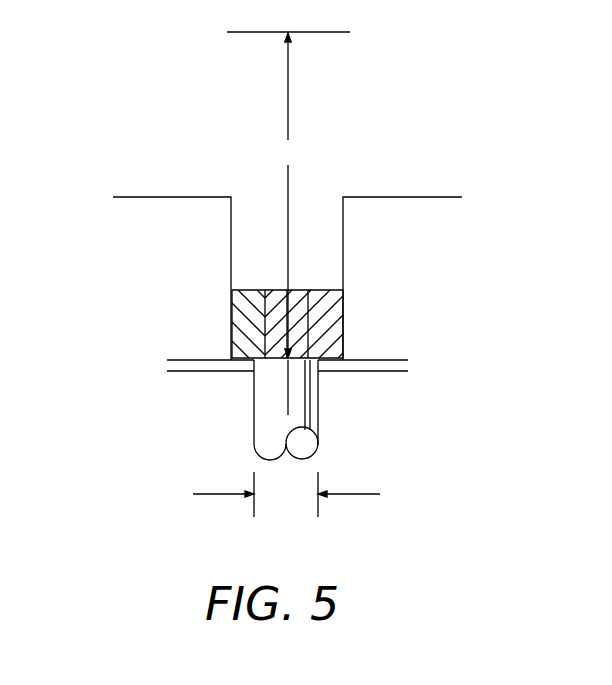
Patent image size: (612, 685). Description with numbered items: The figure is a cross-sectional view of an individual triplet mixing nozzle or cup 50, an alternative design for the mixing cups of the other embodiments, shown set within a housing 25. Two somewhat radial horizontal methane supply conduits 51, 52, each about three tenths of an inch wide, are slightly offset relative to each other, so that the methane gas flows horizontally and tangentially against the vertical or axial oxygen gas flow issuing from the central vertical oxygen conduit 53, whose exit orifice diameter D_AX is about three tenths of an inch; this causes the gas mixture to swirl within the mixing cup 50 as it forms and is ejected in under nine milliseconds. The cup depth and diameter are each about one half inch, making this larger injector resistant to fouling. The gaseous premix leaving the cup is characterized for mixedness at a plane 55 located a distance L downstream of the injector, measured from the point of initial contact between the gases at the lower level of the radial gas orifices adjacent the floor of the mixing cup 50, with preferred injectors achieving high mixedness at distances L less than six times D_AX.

The housing 25 is at (167, 196).
The triplet mixing nozzle or cup 50 is at (307, 195).
The methane supply conduit 51 is at (340, 319).
The methane supply conduit 52 is at (232, 327).
The central vertical oxygen conduit 53 is at (309, 404).
The plane 55 is at (362, 32).